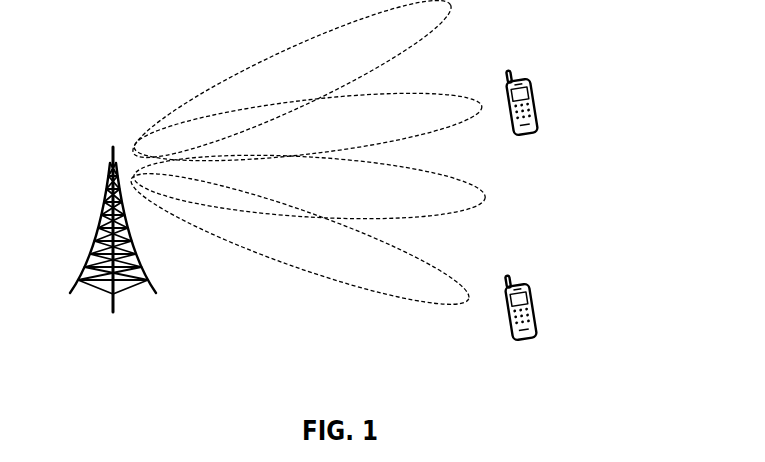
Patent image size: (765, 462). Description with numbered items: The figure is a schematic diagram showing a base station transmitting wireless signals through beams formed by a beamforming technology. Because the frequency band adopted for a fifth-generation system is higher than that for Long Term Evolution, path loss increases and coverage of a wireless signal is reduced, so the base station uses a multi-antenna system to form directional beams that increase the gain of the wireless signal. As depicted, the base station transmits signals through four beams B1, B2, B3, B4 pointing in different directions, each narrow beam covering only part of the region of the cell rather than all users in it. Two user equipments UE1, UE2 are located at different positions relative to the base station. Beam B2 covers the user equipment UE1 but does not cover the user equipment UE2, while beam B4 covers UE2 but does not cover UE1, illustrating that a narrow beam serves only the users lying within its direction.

The beam B1 is at (292, 89).
The beam B2 is at (308, 127).
The beam B3 is at (309, 187).
The beam B4 is at (300, 239).
The user equipment UE1 is at (548, 102).
The user equipment UE2 is at (550, 307).